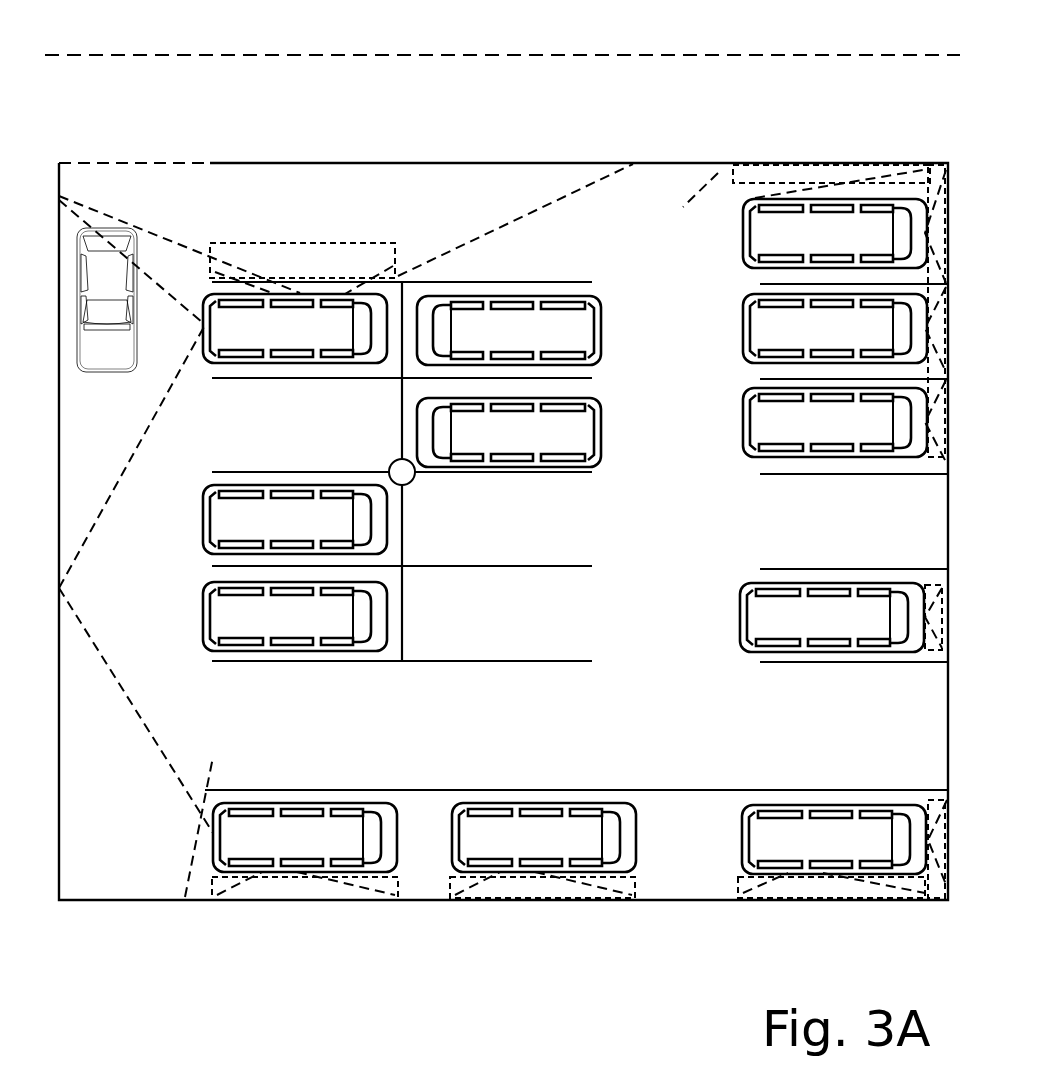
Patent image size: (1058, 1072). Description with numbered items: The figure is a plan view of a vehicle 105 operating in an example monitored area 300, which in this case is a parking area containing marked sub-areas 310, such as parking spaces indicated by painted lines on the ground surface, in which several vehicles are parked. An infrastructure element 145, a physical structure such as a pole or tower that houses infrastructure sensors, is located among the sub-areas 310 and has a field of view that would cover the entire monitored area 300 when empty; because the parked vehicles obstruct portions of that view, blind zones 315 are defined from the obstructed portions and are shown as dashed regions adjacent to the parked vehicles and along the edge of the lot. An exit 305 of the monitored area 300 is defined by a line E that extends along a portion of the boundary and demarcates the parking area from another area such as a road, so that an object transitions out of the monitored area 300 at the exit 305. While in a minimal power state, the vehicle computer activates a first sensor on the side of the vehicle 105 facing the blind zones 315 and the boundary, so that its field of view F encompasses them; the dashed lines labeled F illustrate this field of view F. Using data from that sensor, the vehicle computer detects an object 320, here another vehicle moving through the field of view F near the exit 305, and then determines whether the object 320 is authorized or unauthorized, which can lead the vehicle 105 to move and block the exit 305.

The monitored area 300 is at (100, 903).
The exit 305 is at (100, 162).
The sub-area 310 is at (511, 598).
The blind zone 315 is at (390, 219).
The object 320 is at (122, 373).
The vehicle 105 is at (308, 362).
The infrastructure element 145 is at (500, 529).
The line E is at (163, 163).
The field of view F is at (535, 208).